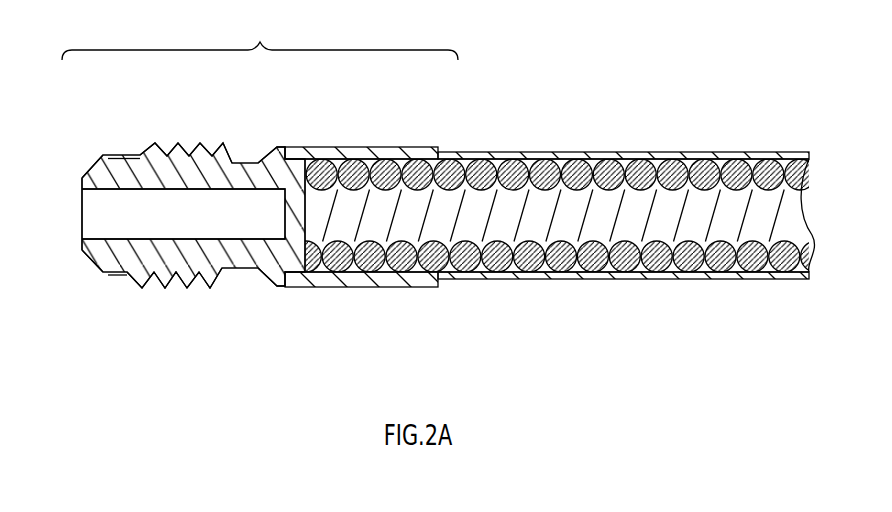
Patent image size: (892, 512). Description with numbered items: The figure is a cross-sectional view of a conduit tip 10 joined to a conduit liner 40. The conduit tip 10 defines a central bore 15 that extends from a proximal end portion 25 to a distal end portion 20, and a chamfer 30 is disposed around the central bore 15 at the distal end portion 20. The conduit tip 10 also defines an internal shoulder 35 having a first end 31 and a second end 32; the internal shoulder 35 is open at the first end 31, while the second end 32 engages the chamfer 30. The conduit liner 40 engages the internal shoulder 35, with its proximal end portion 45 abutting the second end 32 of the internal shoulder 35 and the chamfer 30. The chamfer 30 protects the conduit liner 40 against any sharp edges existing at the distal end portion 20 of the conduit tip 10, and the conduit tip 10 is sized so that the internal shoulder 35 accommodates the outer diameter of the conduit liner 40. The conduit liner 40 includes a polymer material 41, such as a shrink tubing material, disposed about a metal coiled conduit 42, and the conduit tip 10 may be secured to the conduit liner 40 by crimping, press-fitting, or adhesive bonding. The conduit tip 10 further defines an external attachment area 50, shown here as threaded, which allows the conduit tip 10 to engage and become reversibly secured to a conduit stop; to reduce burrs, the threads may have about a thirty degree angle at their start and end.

The conduit tip 10 is at (260, 36).
The central bore 15 is at (135, 202).
The distal end portion 20 is at (253, 207).
The proximal end portion 25 is at (85, 183).
The chamfer 30 is at (297, 190).
The first end 31 is at (448, 152).
The second end 32 is at (318, 162).
The internal shoulder 35 is at (372, 147).
The conduit liner 40 is at (690, 223).
The polymer material 41 is at (643, 280).
The metal coiled conduit 42 is at (560, 258).
The proximal end portion 45 is at (313, 222).
The external attachment area 50 is at (177, 148).